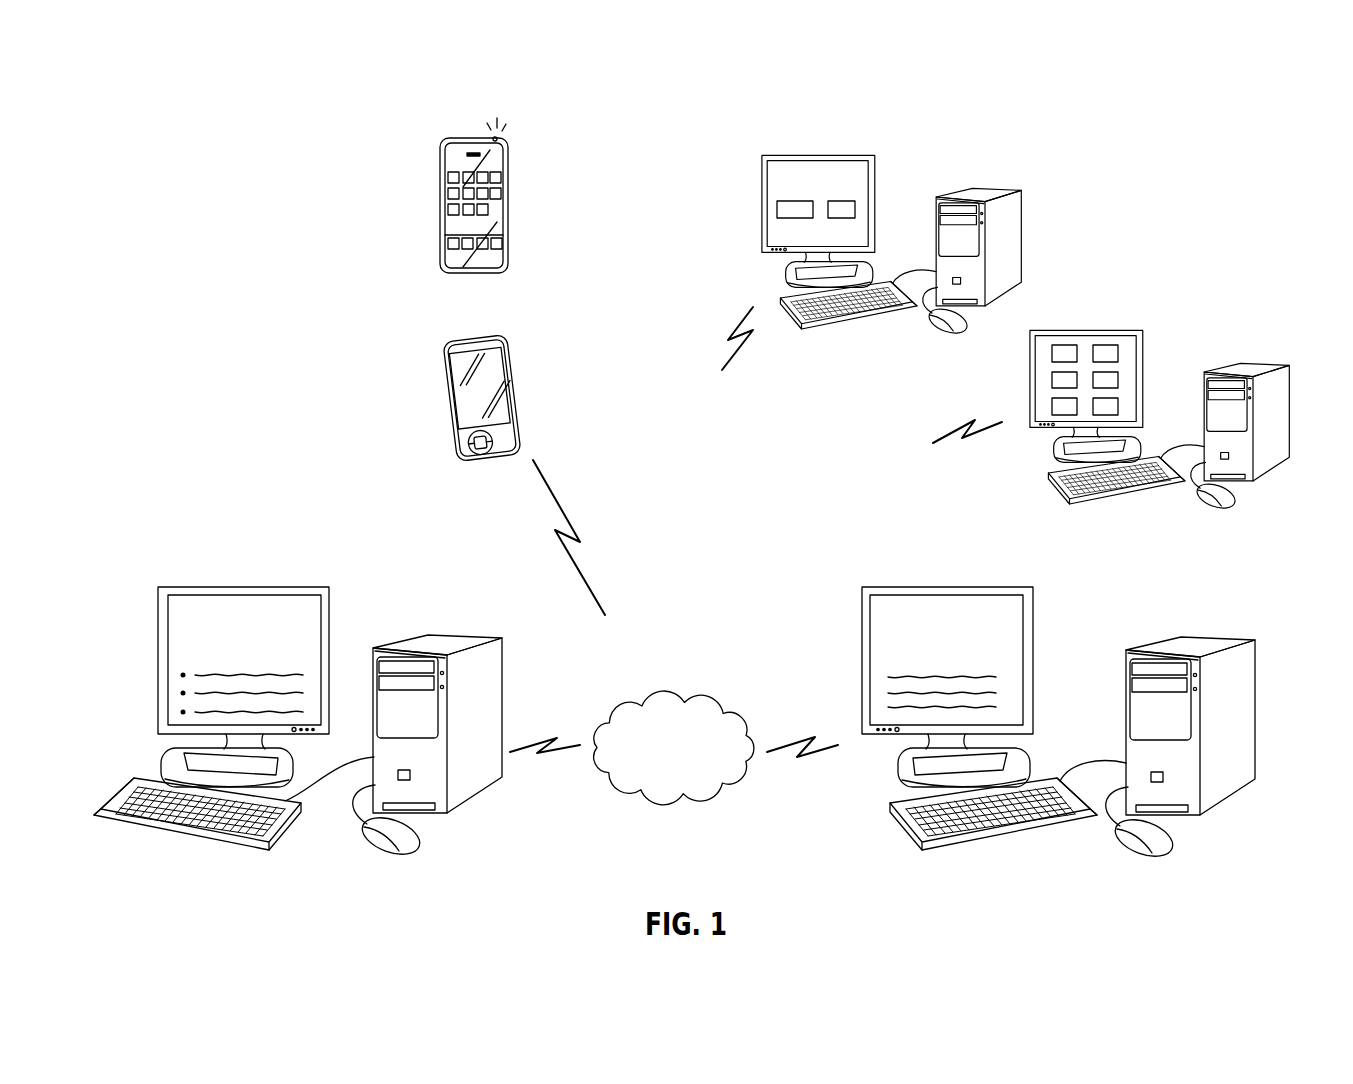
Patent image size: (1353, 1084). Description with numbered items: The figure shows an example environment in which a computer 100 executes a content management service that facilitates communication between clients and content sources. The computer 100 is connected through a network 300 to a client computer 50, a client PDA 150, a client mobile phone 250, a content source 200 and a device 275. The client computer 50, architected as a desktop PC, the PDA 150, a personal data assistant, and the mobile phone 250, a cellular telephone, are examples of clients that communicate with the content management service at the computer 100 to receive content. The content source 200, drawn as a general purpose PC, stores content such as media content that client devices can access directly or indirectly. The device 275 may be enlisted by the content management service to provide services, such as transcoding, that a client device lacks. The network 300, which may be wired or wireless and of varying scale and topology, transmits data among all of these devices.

The client computer 50 is at (253, 576).
The computer 100 is at (973, 571).
The client PDA 150 is at (438, 381).
The content source 200 is at (1173, 329).
The client mobile phone 250 is at (423, 191).
The device 275 is at (912, 161).
The network 300 is at (680, 694).